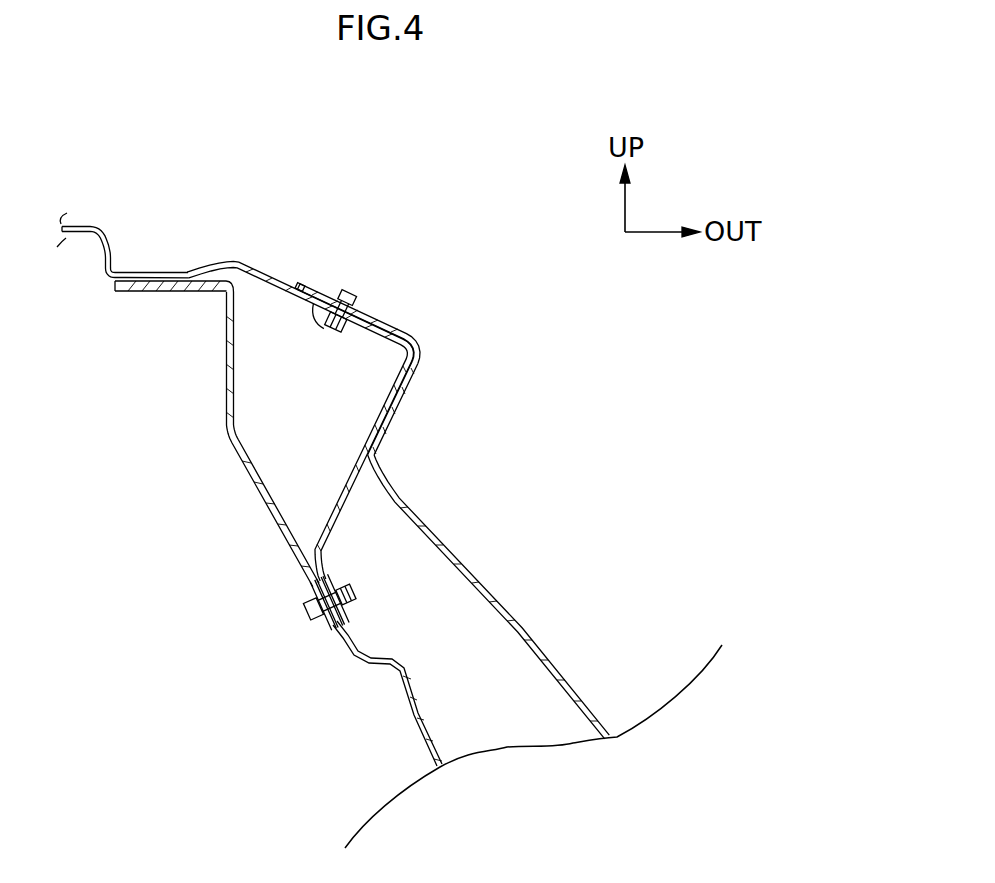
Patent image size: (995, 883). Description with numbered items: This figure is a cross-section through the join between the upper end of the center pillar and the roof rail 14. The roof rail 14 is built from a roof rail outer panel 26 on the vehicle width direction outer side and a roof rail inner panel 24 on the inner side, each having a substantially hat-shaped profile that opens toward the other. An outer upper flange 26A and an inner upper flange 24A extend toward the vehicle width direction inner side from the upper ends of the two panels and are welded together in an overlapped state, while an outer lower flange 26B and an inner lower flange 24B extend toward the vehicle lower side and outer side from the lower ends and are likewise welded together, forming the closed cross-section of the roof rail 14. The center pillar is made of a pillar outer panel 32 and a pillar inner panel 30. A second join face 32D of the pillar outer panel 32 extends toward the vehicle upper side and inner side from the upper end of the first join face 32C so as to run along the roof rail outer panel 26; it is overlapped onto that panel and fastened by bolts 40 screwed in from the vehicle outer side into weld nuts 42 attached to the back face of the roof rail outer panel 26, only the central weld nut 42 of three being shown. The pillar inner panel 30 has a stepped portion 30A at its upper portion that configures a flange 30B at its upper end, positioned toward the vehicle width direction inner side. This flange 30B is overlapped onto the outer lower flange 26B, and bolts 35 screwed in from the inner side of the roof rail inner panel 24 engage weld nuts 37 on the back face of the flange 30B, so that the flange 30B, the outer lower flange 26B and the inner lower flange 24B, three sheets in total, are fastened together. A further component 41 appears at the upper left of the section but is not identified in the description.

The roof rail 14 is at (225, 585).
The roof rail inner panel 24 is at (230, 448).
The inner upper flange 24A is at (140, 291).
The inner lower flange 24B is at (308, 583).
The roof rail outer panel 26 is at (347, 470).
The outer upper flange 26A is at (140, 277).
The outer lower flange 26B is at (323, 576).
The pillar inner panel 30 is at (407, 700).
The stepped portion 30A is at (380, 658).
The flange 30B is at (347, 617).
The pillar outer panel 32 is at (510, 607).
The first join face 32C is at (405, 407).
The second join face 32D is at (381, 320).
The bolt 35 is at (310, 618).
The weld nut 37 is at (353, 604).
The bolt 40 is at (341, 292).
The body panel 41 is at (74, 224).
The weld nut 42 is at (300, 285).